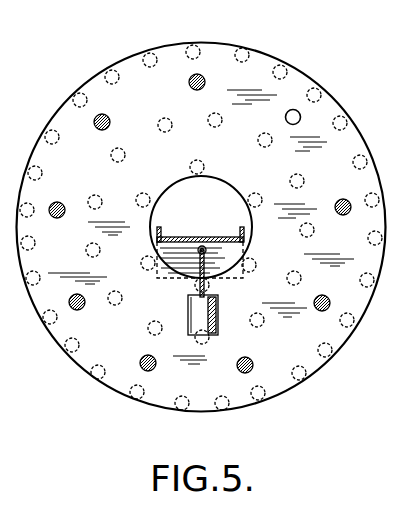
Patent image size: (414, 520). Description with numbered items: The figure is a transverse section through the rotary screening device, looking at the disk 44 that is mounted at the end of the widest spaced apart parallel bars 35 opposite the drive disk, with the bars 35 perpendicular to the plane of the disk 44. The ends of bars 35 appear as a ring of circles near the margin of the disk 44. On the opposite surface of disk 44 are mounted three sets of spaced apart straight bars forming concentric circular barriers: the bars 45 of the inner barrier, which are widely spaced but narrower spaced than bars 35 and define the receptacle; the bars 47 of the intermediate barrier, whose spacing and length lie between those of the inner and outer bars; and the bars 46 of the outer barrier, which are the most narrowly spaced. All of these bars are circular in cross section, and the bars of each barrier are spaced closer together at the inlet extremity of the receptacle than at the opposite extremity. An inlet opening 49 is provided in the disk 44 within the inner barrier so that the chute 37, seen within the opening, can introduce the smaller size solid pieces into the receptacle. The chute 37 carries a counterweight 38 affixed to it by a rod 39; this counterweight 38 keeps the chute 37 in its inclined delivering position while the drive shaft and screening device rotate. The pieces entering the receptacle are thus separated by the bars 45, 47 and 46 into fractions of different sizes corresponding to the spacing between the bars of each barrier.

The disk 44 is at (297, 83).
The inlet opening 49 is at (226, 183).
The bars of the outer barrier 46 is at (192, 46).
The bars of the intermediate barrier 47 is at (163, 118).
The bars of the inner barrier 45 is at (170, 165).
The widest spaced apart parallel bars 35 is at (60, 202).
The chute 37 is at (190, 236).
The rod 39 is at (205, 270).
The counterweight 38 is at (190, 307).